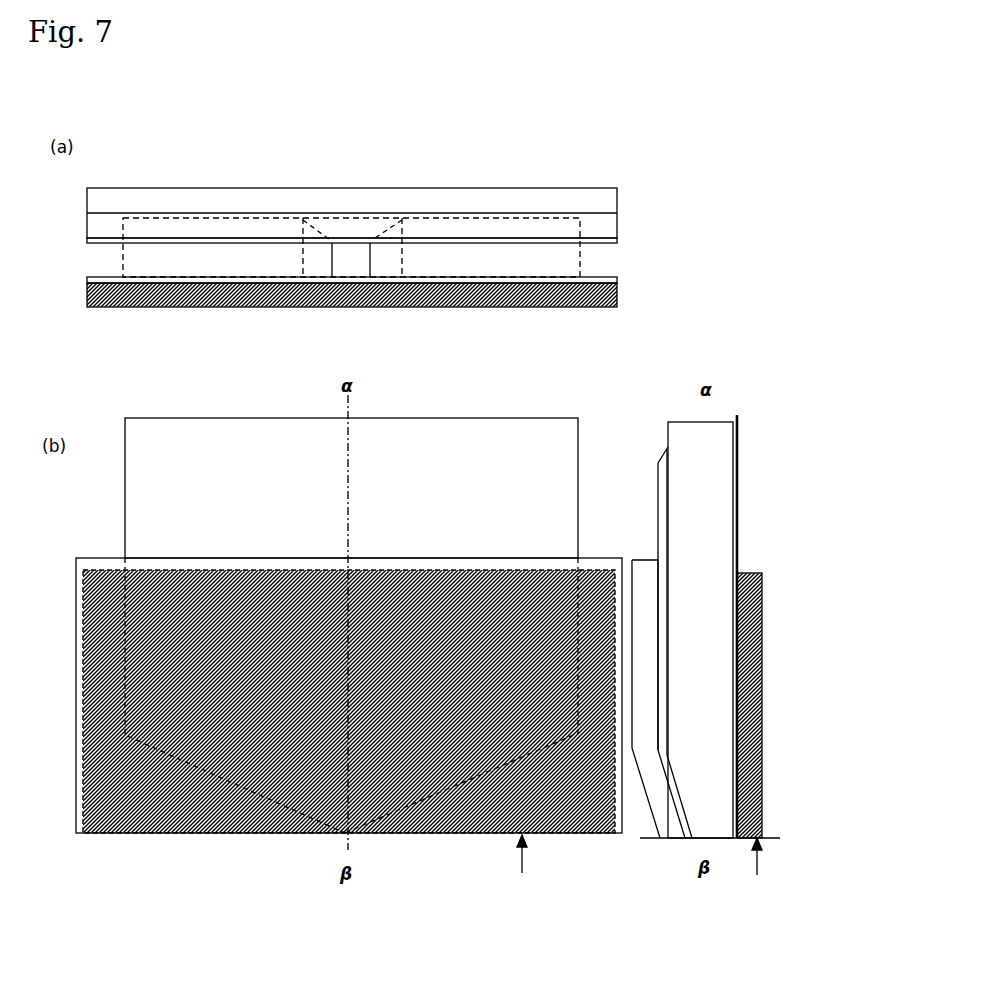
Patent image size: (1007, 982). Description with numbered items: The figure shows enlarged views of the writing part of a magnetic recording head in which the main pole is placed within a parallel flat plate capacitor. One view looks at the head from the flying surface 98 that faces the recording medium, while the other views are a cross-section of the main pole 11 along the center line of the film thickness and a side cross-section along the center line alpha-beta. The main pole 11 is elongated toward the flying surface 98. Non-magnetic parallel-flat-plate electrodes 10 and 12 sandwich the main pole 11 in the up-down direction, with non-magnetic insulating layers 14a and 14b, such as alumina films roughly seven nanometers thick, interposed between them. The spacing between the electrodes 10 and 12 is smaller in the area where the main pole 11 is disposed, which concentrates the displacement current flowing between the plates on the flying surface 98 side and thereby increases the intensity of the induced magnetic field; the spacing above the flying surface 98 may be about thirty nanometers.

The non-magnetic parallel-flat-plate electrode 10 is at (618, 300).
The main pole 11 is at (345, 252).
The non-magnetic parallel-flat-plate electrode 12 is at (618, 190).
The non-magnetic layer 14a is at (612, 278).
The non-magnetic layer 14b is at (618, 243).
The flying surface 98 is at (640, 869).